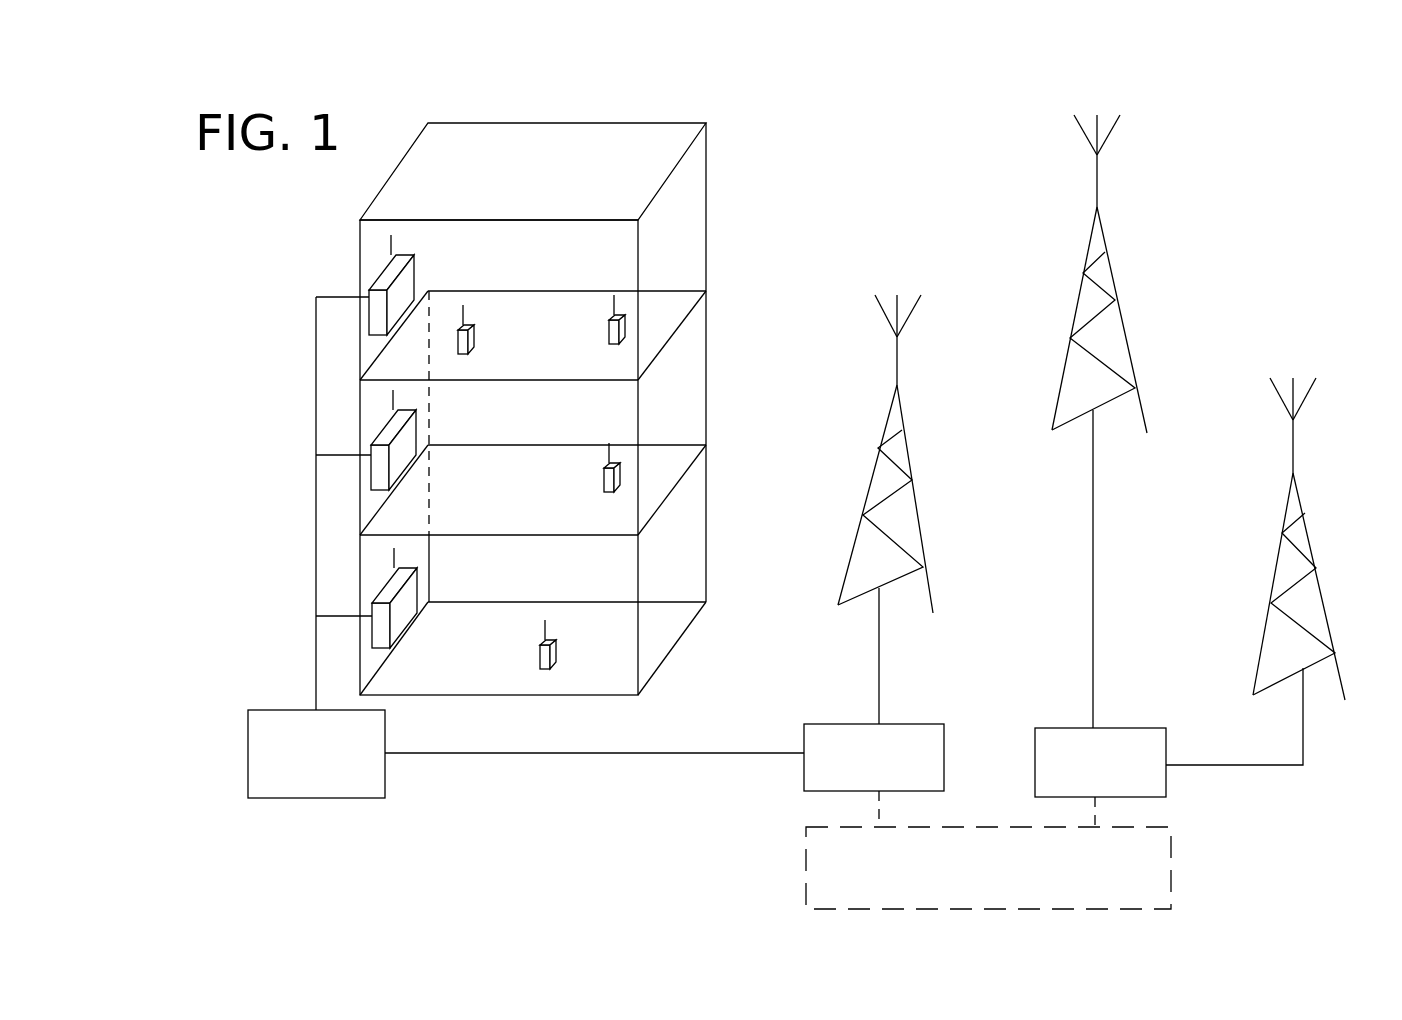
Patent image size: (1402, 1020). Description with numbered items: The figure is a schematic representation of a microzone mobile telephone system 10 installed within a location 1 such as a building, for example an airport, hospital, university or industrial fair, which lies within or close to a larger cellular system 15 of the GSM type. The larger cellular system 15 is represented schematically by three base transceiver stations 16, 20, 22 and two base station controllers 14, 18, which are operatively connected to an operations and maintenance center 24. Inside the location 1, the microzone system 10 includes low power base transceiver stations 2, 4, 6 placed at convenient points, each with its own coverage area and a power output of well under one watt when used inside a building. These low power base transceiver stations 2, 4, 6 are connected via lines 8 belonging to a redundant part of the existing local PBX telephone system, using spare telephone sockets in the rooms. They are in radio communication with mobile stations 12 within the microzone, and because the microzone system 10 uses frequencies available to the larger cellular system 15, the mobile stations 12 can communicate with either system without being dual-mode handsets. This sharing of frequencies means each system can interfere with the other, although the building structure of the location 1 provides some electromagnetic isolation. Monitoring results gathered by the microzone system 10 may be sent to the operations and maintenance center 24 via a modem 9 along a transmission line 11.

The location 1 is at (706, 170).
The low power base transceiver station 2 is at (405, 292).
The low power base transceiver station 4 is at (405, 442).
The low power base transceiver station 6 is at (407, 600).
The lines 8 is at (316, 412).
The modem 9 is at (278, 712).
The microzone mobile telephone system 10 is at (310, 205).
The transmission line 11 is at (510, 752).
The mobile stations 12 is at (475, 340).
The base station controller 14 is at (835, 724).
The larger cellular system 15 is at (1297, 255).
The base transceiver station 16 is at (908, 453).
The base station controller 18 is at (1068, 728).
The base transceiver station 20 is at (1113, 278).
The base transceiver station 22 is at (1312, 542).
The operations and maintenance center 24 is at (1171, 843).